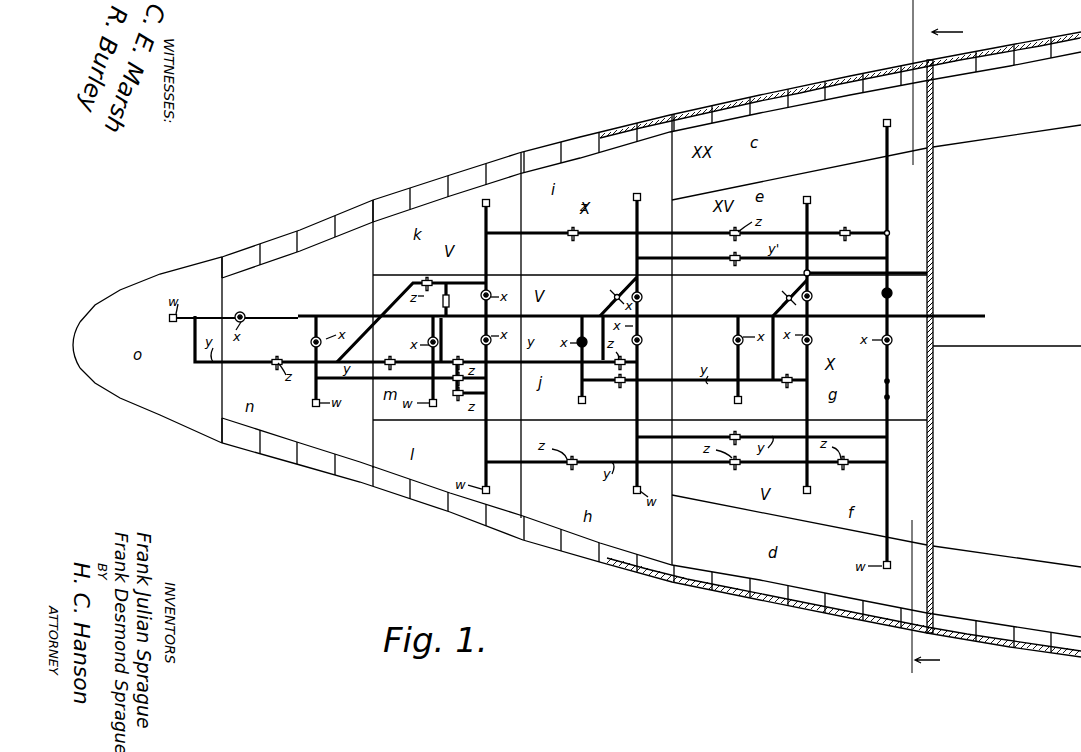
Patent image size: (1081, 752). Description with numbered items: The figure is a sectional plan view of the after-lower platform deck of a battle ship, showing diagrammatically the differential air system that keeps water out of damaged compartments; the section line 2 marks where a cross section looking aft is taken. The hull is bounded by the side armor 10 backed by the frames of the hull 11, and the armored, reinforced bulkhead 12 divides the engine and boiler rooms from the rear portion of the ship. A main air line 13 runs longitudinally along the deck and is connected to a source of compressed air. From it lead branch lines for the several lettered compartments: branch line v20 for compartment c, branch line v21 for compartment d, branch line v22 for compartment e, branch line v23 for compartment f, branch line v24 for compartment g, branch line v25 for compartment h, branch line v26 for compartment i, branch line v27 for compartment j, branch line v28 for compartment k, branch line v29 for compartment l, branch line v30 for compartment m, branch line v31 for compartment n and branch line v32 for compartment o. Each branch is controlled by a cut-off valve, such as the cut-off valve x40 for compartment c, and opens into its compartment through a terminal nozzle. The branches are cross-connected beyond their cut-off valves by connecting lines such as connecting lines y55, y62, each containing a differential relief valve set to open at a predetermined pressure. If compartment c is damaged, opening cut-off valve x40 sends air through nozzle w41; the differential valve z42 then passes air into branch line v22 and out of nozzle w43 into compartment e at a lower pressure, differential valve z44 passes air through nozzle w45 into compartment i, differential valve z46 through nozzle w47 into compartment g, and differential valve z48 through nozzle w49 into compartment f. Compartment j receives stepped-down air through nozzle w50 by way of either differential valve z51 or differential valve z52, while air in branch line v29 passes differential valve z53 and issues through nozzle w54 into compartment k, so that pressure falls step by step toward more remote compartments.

The section line 2— 2 is at (937, 344).
The side armor 10 is at (1060, 32).
The frames of the hull 11 is at (798, 98).
The armored reinforced bulkhead 12 is at (935, 392).
The main air line 13 is at (355, 316).
The branch line v20 is at (889, 212).
The branch line v21 is at (889, 379).
The branch line v22 is at (810, 269).
The branch line v23 is at (810, 342).
The branch line v24 is at (735, 339).
The branch line v25 is at (640, 341).
The branch line v26 is at (640, 298).
The branch line v27 is at (578, 340).
The branch line v28 is at (450, 306).
The branch line v29 is at (480, 341).
The branch line v30 is at (430, 336).
The branch line v31 is at (312, 339).
The branch line v32 is at (288, 302).
The terminal nozzle w41 is at (884, 126).
The terminal nozzle w43 is at (809, 202).
The terminal nozzle w45 is at (636, 198).
The terminal nozzle w47 is at (733, 401).
The terminal nozzle w49 is at (811, 490).
The terminal nozzle w50 is at (578, 401).
The terminal nozzle w54 is at (482, 205).
The cut-off valve x40 is at (882, 296).
The connecting line y55 is at (933, 273).
The connecting line y62 is at (892, 293).
The differential valve z42 is at (847, 238).
The differential valve z44 is at (732, 258).
The differential valve z46 is at (784, 296).
The differential valve z48 is at (788, 386).
The differential valve z51 is at (621, 386).
The differential valve z52 is at (612, 296).
The differential valve z53 is at (582, 250).